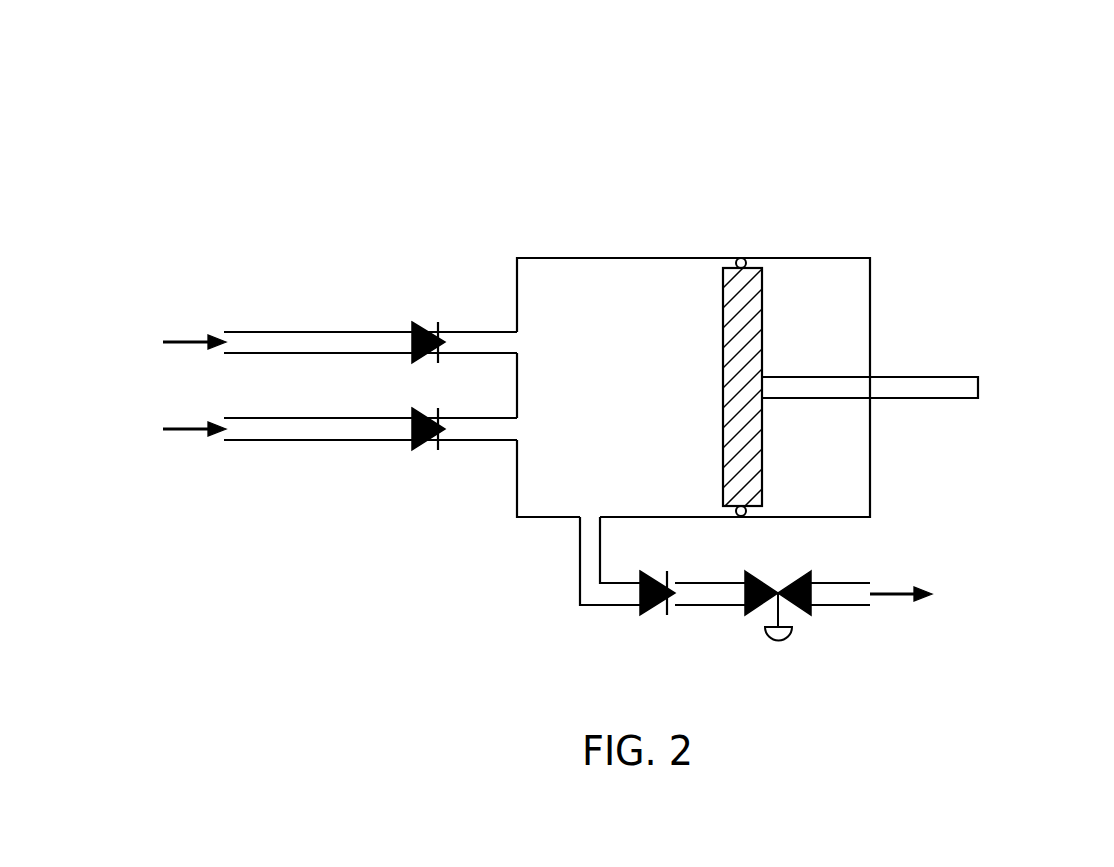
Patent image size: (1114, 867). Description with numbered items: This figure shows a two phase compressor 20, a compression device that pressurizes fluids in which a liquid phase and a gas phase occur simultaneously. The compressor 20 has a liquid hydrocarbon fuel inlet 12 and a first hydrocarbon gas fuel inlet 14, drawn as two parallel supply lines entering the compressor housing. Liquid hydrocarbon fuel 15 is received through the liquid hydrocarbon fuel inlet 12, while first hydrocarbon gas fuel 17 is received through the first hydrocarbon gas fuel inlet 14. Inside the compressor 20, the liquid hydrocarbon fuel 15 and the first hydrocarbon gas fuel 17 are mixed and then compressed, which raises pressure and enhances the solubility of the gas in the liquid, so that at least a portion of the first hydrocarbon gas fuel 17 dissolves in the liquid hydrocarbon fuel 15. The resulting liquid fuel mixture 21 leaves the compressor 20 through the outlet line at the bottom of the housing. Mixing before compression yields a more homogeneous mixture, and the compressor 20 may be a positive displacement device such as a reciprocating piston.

The two phase compressor 20 is at (983, 100).
The liquid hydrocarbon fuel inlet 12 is at (471, 331).
The first hydrocarbon gas fuel inlet 14 is at (471, 418).
The liquid hydrocarbon fuel 15 is at (187, 341).
The first hydrocarbon gas fuel 17 is at (187, 428).
The liquid fuel mixture 21 is at (894, 592).